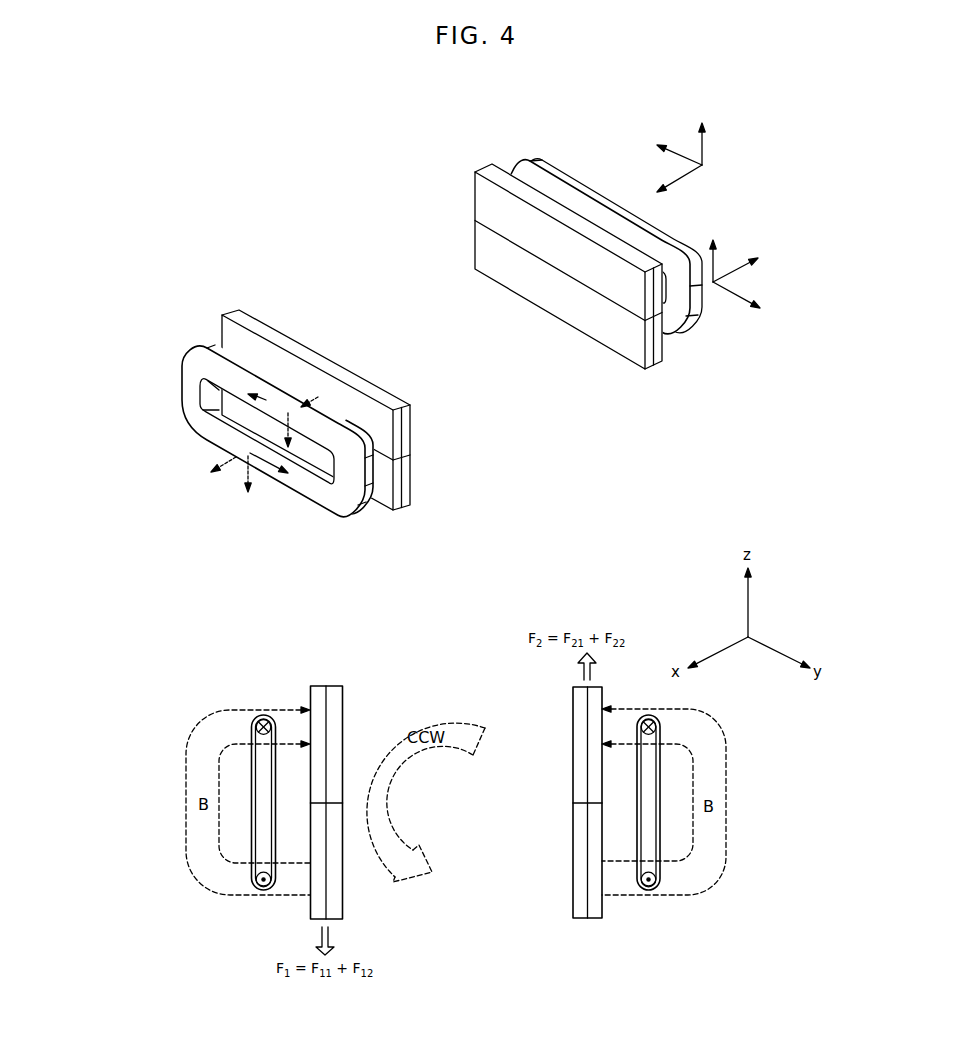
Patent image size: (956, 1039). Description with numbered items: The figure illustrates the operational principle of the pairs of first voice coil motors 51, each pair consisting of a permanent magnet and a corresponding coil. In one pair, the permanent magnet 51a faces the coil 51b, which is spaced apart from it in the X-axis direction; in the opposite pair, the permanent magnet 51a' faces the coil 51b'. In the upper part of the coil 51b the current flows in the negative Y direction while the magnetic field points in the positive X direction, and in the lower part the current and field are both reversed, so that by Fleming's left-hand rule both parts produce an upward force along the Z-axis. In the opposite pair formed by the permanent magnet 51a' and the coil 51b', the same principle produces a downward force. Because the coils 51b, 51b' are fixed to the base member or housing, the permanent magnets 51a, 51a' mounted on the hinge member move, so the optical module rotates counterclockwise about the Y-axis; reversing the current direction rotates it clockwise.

The first voice coil motors 51 is at (488, 588).
The permanent magnet 51a is at (584, 567).
The coil 51b is at (620, 564).
The permanent magnet 51a' is at (329, 614).
The coil 51b' is at (277, 649).